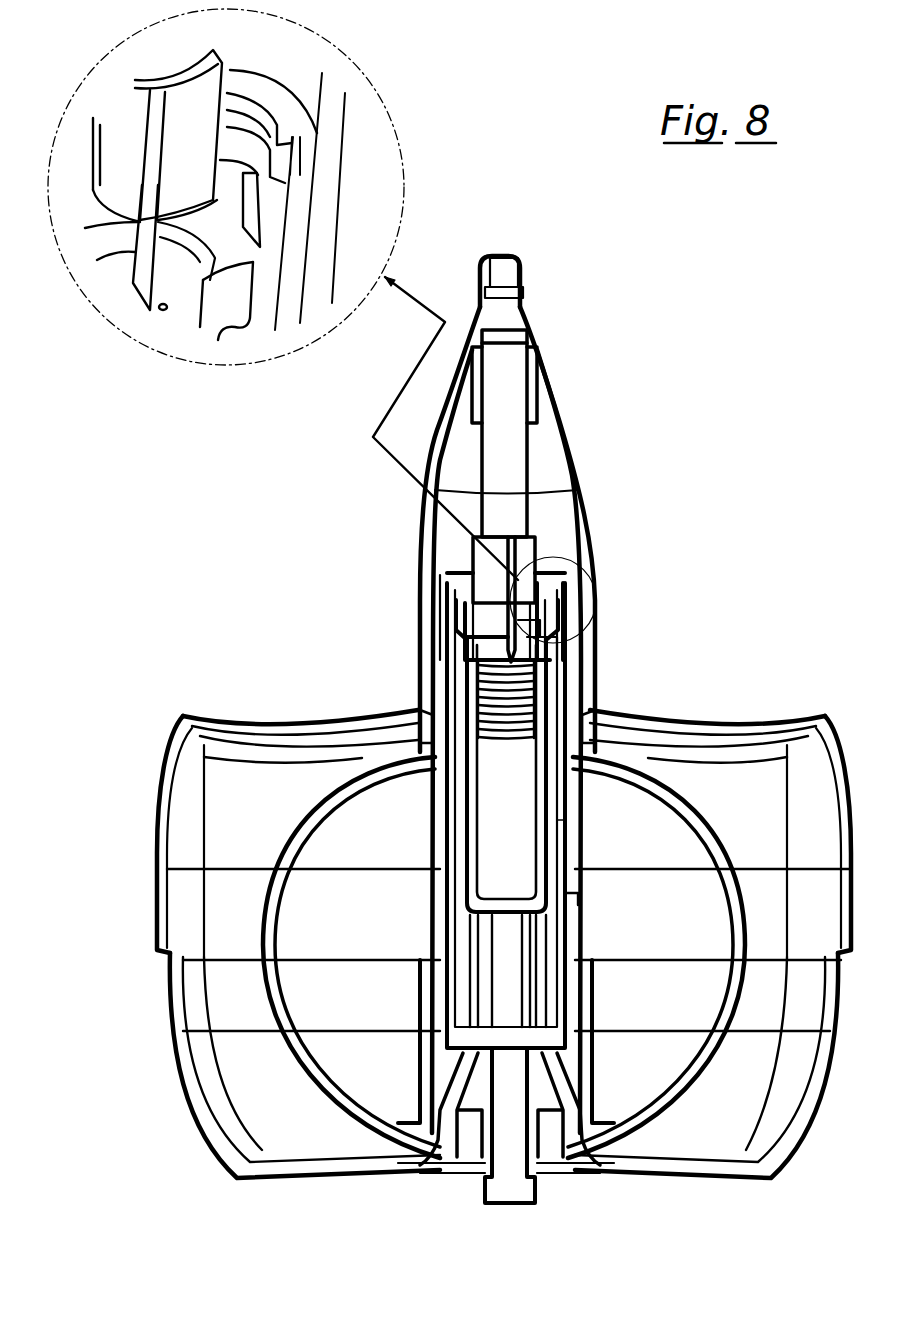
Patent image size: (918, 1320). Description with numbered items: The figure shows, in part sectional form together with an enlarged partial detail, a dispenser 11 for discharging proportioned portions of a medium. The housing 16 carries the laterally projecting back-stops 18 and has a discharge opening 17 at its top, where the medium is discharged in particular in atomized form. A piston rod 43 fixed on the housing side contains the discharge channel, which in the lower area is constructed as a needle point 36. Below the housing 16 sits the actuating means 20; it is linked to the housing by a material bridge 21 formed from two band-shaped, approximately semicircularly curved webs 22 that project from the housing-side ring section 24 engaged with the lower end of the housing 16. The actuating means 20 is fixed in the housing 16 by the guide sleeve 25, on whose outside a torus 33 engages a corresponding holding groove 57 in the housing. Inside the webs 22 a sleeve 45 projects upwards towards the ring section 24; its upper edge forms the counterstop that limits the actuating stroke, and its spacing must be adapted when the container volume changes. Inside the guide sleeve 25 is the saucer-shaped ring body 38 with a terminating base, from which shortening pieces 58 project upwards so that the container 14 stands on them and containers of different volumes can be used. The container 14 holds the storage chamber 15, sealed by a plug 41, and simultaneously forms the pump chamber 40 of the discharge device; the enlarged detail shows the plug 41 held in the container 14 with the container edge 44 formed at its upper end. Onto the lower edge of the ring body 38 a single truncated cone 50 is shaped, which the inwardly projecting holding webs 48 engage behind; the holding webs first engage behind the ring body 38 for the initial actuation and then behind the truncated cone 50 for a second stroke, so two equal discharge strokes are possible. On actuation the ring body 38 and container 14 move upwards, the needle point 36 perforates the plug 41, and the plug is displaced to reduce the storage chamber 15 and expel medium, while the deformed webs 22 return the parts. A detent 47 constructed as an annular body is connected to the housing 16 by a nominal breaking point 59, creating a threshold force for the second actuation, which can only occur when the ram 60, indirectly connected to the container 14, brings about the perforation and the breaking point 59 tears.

The dispenser 11 is at (655, 525).
The container 14 is at (499, 895).
The storage chamber 15 is at (523, 835).
The housing 16 is at (556, 386).
The discharge opening 17 is at (505, 249).
The back-stops 18 is at (264, 725).
The actuating means 20 is at (272, 1128).
The material bridge 21 is at (320, 858).
The webs 22 is at (312, 1056).
The housing-side ring section 24 is at (432, 760).
The guide sleeve 25 is at (440, 852).
The torus 33 is at (425, 730).
The needle point 36 is at (133, 282).
The ring body 38 is at (570, 833).
The pump chamber 40 is at (495, 850).
The plug 41 is at (517, 745).
The piston rod 43 is at (515, 415).
The container edge 44 is at (238, 300).
The sleeve 45 is at (598, 998).
The detent 47 is at (237, 118).
The holding webs 48 is at (560, 1060).
The truncated cones 50 is at (532, 1088).
The holding groove 57 is at (592, 730).
The shortening pieces 58 is at (512, 963).
The nominal breaking point 59 is at (587, 893).
The ram 60 is at (240, 217).